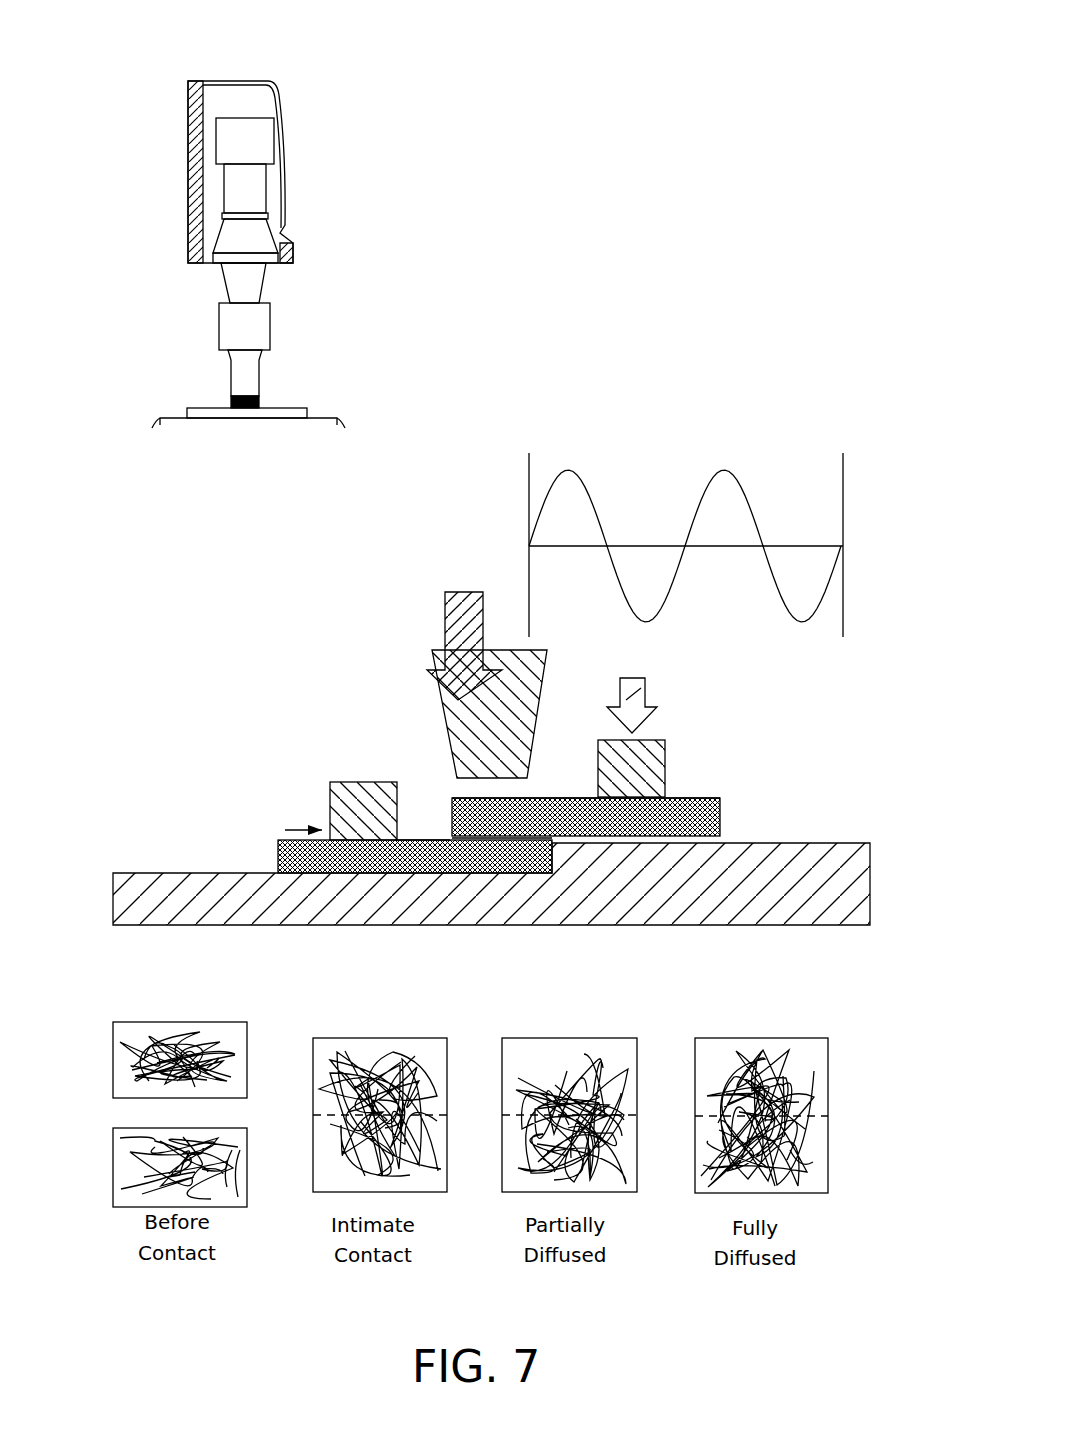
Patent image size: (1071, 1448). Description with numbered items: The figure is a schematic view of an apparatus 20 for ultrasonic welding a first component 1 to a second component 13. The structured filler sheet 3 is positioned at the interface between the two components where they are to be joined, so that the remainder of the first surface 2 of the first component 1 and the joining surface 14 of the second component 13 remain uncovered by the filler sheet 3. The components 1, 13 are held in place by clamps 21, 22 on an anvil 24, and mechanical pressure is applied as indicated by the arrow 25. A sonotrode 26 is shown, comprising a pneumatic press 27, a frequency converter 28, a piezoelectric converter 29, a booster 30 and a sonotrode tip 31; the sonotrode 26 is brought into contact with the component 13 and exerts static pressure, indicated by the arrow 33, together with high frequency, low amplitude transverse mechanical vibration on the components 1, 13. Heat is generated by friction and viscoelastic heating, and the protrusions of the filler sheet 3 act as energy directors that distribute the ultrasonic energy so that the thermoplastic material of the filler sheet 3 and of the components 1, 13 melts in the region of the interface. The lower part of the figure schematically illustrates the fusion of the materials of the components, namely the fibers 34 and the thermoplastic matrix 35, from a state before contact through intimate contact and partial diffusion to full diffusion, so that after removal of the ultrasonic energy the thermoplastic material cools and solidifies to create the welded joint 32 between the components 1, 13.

The first component 1 is at (278, 853).
The first surface of the first component 2 is at (408, 857).
The structured filler sheet 3 is at (660, 797).
The second component 13 is at (720, 815).
The joining surface of the second component 14 is at (435, 835).
The apparatus for ultrasonic welding 20 is at (140, 477).
The clamp 21 is at (293, 823).
The clamp 22 is at (678, 750).
The anvil 24 is at (167, 858).
The arrow indicating mechanical pressure 25 is at (647, 698).
The sonotrode 26 is at (281, 80).
The pneumatic press 27 is at (219, 80).
The frequency converter 28 is at (274, 139).
The piezoelectric converter 29 is at (218, 187).
The booster 30 is at (272, 274).
The sonotrode tip 31 is at (209, 343).
The welded joint 32 is at (835, 1118).
The arrow indicating static pressure 33 is at (462, 593).
The fibers 34 is at (757, 1127).
The thermoplastic matrix 35 is at (813, 1162).